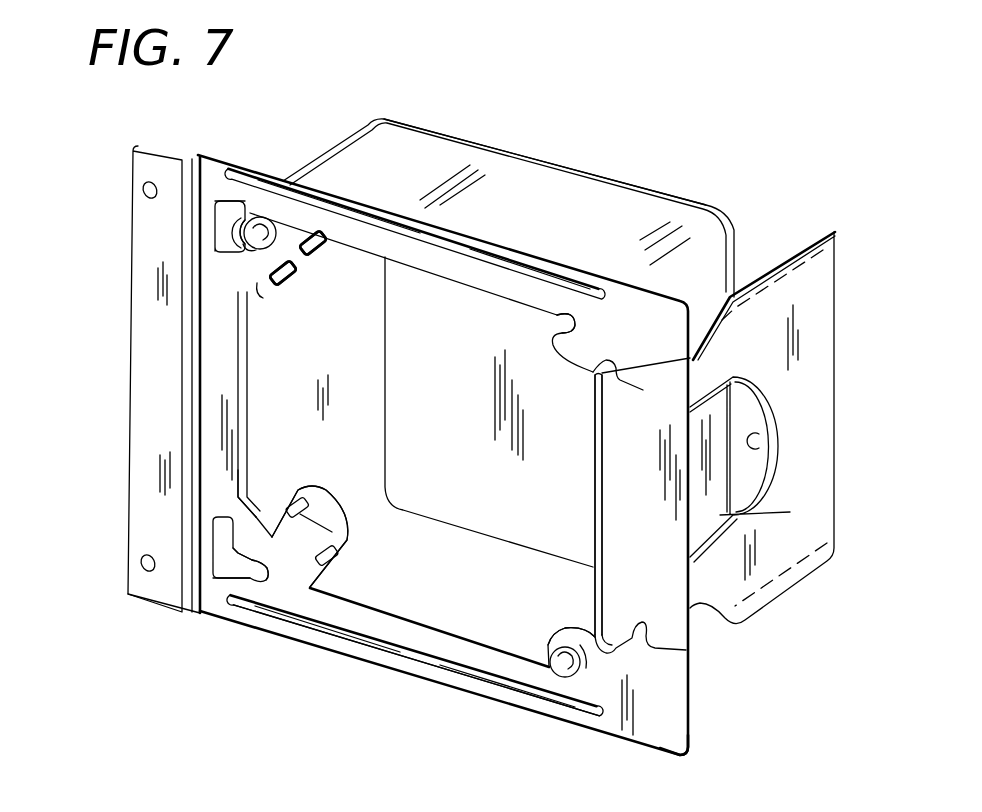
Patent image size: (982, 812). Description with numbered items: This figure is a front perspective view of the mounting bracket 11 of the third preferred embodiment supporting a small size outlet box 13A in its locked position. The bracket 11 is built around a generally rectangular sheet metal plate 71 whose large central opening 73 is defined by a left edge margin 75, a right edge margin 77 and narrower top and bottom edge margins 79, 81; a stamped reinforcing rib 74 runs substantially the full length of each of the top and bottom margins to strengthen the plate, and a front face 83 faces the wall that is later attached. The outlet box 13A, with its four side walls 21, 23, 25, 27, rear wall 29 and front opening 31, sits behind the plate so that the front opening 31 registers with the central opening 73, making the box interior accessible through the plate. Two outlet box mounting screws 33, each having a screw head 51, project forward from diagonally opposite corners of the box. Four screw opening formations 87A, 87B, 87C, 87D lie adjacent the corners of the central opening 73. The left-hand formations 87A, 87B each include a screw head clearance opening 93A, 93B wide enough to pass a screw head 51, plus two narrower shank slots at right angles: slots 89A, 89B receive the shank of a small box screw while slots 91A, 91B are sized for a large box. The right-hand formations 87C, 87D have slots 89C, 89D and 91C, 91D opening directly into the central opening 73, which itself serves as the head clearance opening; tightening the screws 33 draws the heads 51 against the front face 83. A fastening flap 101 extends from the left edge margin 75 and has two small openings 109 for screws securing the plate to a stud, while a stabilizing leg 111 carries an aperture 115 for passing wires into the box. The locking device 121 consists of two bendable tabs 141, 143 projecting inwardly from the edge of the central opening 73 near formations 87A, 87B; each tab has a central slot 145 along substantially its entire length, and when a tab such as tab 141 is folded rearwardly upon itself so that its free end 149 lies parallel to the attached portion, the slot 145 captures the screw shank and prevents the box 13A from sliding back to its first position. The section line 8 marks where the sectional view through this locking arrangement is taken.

The mounting bracket 11 is at (100, 183).
The section line 8 is at (144, 150).
The small size outlet box 13A is at (556, 167).
The side wall 21 is at (298, 378).
The side wall 23 is at (474, 548).
The side wall 25 is at (747, 515).
The side wall 27 is at (634, 200).
The rear wall 29 is at (468, 375).
The front opening 31 is at (592, 507).
The outlet box mounting screw 33 is at (280, 226).
The screw head 51 is at (250, 253).
The plate 71 is at (690, 740).
The central opening 73 is at (258, 515).
The reinforcing rib 74 is at (476, 258).
The left edge margin 75 is at (213, 318).
The right edge margin 77 is at (667, 670).
The top edge margin 79 is at (468, 272).
The bottom edge margin 81 is at (406, 642).
The front face 83 is at (350, 618).
The screw opening formation 87A is at (219, 186).
The screw opening formation 87B is at (223, 582).
The screw opening formation 87C is at (556, 352).
The screw opening formation 87D is at (571, 623).
The screw shank clearance slot 89A is at (256, 210).
The screw shank clearance slot 89B is at (250, 592).
The screw shank clearance slot 89C is at (556, 320).
The screw shank clearance slot 89D is at (548, 655).
The screw shank clearance slot 91A is at (236, 238).
The screw shank clearance slot 91B is at (213, 530).
The screw shank clearance slot 91C is at (692, 358).
The screw shank clearance slot 91D is at (674, 650).
The screw head clearance opening 93A is at (220, 222).
The screw head clearance opening 93B is at (215, 545).
The fastening flap 101 is at (130, 338).
The opening 109 is at (150, 182).
The stabilizing leg 111 is at (828, 380).
The aperture 115 is at (772, 447).
The locking device 121 is at (338, 246).
The bendable tab 141 is at (264, 292).
The bendable tab 143 is at (336, 558).
The slot 145 is at (318, 262).
The free end 149 is at (314, 492).